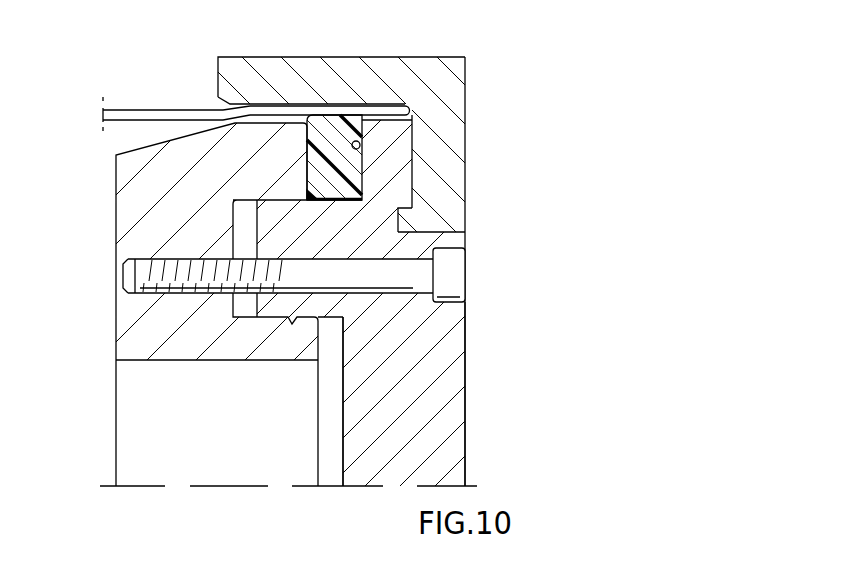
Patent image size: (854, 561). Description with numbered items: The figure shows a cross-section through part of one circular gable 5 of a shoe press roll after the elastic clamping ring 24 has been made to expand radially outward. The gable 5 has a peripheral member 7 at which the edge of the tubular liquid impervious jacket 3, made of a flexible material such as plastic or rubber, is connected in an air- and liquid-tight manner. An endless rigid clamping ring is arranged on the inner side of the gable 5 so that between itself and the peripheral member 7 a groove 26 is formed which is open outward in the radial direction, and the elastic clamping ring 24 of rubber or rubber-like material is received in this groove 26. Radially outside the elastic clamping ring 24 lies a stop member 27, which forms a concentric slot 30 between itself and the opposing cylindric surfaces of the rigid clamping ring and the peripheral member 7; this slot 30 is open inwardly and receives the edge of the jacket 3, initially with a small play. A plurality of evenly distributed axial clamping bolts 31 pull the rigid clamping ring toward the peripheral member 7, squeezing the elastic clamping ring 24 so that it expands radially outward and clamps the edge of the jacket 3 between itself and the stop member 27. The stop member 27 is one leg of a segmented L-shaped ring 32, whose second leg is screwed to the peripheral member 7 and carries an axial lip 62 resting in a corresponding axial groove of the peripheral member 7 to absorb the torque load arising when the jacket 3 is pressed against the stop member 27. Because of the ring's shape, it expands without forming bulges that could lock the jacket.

The tubular liquid impervious jacket 3 is at (152, 110).
The concentric slot 30 is at (258, 120).
The stop member 27 is at (302, 72).
The elastic clamping ring 24 is at (343, 119).
The groove 26 is at (360, 146).
The segmented L-shaped ring 32 is at (465, 72).
The axial lip 62 is at (407, 226).
The axial clamping bolt 31 is at (452, 277).
The peripheral member 7 is at (465, 355).
The circular gable 5 is at (465, 405).